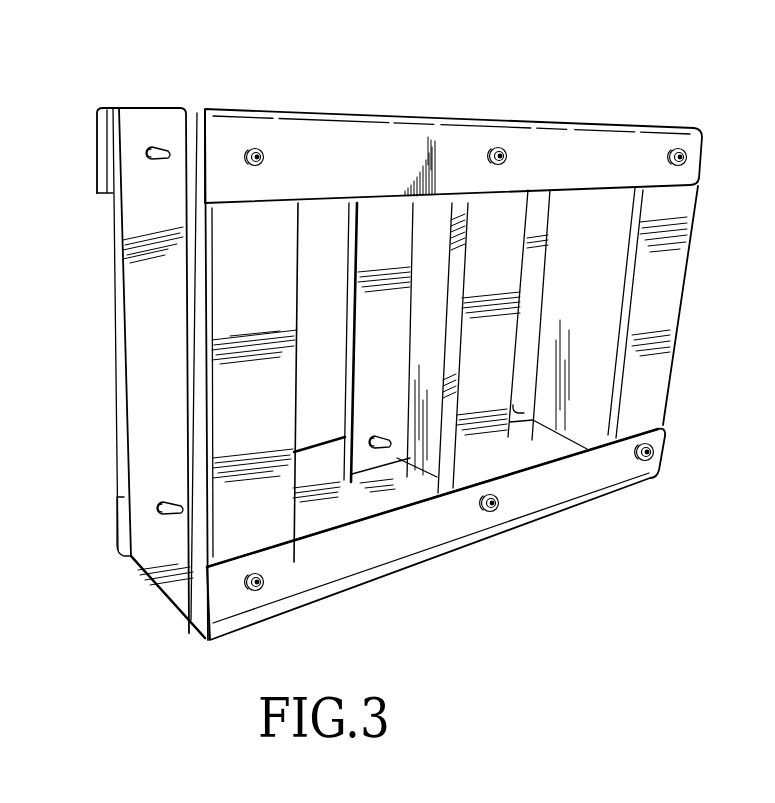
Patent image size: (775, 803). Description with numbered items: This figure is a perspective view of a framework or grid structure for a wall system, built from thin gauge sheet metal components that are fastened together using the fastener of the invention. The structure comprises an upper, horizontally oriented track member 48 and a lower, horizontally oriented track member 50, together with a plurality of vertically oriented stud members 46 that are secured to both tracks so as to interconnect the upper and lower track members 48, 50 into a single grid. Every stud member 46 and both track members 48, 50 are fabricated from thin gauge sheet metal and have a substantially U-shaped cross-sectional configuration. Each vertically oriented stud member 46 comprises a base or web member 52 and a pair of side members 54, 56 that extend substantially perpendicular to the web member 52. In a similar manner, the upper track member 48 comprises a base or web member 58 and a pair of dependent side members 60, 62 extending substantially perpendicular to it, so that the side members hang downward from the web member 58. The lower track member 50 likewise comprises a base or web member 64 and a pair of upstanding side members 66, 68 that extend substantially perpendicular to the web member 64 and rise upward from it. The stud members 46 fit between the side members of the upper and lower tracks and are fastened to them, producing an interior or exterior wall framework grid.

The vertically oriented stud member 46 is at (677, 307).
The upper track member 48 is at (425, 120).
The lower track member 50 is at (550, 507).
The base or web member 52 is at (478, 347).
The side member 54 is at (450, 285).
The side member 56 is at (112, 218).
The base or web member 58 is at (148, 125).
The dependent side member 60 is at (97, 153).
The dependent side member 62 is at (358, 170).
The base or web member 64 is at (153, 583).
The upstanding side member 66 is at (117, 518).
The upstanding side member 68 is at (303, 570).